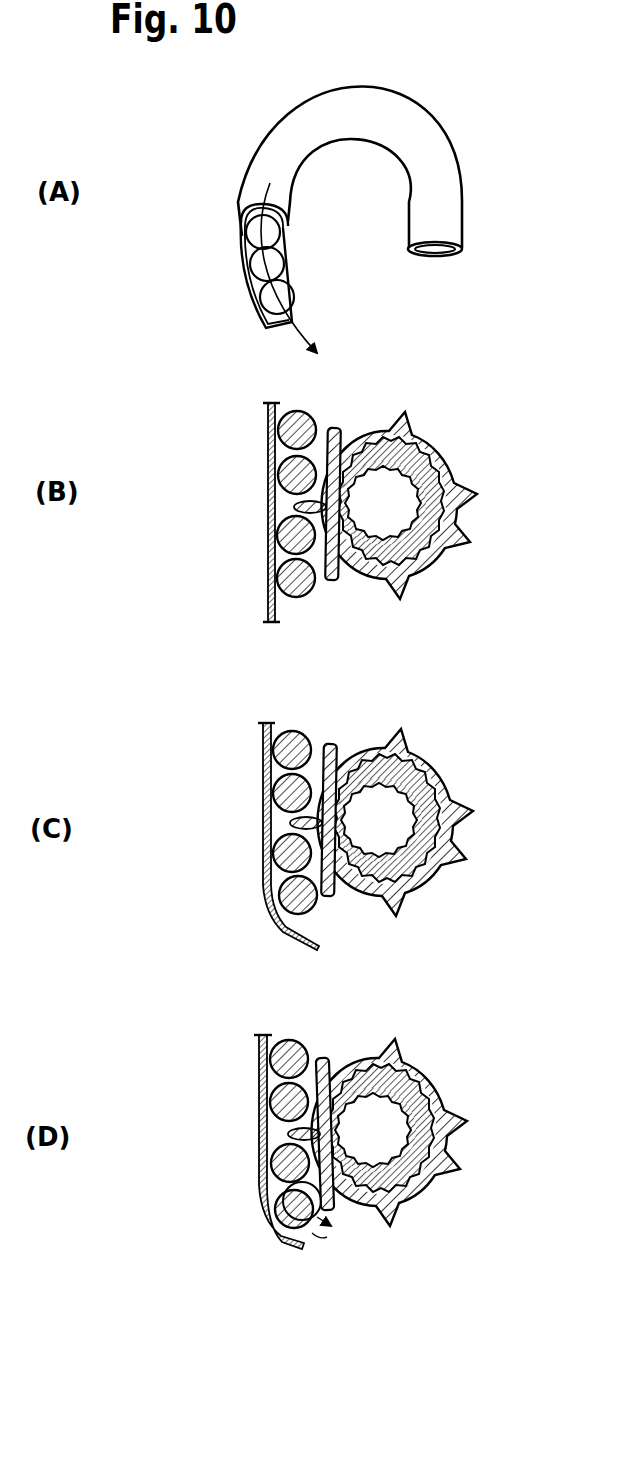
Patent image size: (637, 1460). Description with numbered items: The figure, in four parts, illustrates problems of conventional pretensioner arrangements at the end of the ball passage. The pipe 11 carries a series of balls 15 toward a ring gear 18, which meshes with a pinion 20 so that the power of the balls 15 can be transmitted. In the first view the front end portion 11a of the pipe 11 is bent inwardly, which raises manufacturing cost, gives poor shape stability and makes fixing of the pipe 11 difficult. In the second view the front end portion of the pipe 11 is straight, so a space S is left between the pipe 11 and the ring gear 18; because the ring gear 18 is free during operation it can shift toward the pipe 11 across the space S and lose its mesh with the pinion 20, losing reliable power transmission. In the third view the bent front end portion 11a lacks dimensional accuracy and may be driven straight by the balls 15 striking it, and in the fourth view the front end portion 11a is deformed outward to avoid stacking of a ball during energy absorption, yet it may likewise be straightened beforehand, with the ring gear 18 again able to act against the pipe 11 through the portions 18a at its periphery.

The pipe 11 is at (450, 183).
The front end portion of the pipe 11a is at (248, 278).
The balls 15 is at (287, 295).
The ring gear 18 is at (367, 440).
The engaging projection of rotary member 18a is at (293, 505).
The pinion 20 is at (410, 480).
The space S is at (323, 586).